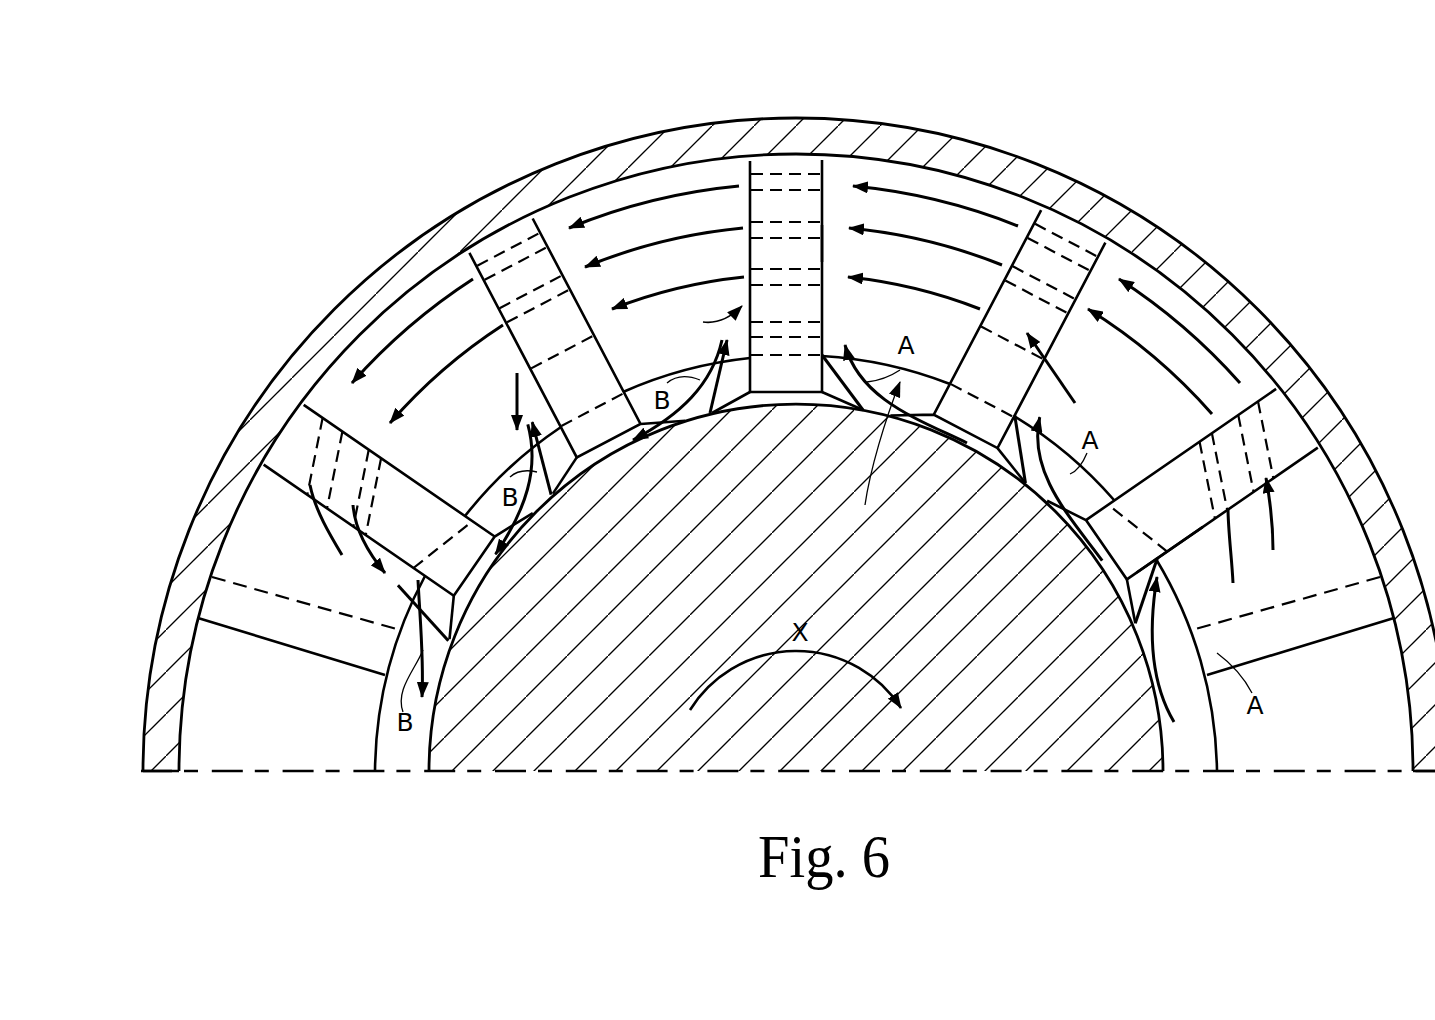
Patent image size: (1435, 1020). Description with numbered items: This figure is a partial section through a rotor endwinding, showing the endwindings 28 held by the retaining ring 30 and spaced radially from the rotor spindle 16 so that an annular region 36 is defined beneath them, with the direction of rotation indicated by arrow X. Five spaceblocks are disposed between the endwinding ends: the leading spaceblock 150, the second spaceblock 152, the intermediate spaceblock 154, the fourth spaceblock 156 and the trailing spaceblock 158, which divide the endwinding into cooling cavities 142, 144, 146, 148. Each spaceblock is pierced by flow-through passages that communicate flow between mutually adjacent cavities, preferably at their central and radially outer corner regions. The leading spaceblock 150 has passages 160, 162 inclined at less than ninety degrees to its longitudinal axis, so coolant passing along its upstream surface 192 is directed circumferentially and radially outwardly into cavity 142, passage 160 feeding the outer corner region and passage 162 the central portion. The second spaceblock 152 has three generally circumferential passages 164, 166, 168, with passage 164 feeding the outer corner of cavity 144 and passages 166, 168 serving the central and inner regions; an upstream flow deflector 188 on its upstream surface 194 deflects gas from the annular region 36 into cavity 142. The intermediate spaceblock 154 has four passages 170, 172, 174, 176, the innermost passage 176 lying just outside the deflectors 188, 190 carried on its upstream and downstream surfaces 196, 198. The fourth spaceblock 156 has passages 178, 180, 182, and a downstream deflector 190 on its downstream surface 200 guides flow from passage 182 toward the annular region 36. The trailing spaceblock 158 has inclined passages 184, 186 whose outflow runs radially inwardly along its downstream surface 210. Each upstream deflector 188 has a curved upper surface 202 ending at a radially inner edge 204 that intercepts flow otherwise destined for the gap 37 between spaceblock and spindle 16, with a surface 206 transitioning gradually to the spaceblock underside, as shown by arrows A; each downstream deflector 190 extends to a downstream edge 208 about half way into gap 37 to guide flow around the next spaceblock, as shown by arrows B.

The rotor spindle 16 is at (990, 750).
The endwindings 28 is at (873, 458).
The retaining ring 30 is at (955, 150).
The annular region 36 is at (705, 445).
The gap 37 is at (802, 428).
The cooling cavity 142 is at (1190, 313).
The cooling cavity 144 is at (905, 175).
The cooling cavity 146 is at (625, 190).
The cooling cavity 148 is at (405, 320).
The leading spaceblock 150 is at (1290, 445).
The second spaceblock 152 is at (1062, 222).
The intermediate spaceblock 154 is at (790, 160).
The fourth spaceblock 156 is at (510, 237).
The trailing spaceblock 158 is at (298, 428).
The flow-through passage 160 is at (1270, 478).
The flow-through passage 162 is at (1207, 478).
The flow-through passage 164 is at (1040, 215).
The flow-through passage 166 is at (1003, 262).
The flow-through passage 168 is at (983, 307).
The flow-through passage 170 is at (745, 176).
The flow-through passage 172 is at (752, 224).
The flow-through passage 174 is at (752, 270).
The flow-through passage 176 is at (822, 320).
The flow-through passage 178 is at (540, 215).
The flow-through passage 180 is at (580, 266).
The flow-through passage 182 is at (597, 310).
The flow-through passage 184 is at (318, 452).
The flow-through passage 186 is at (372, 468).
The upstream flow deflector 188 is at (987, 463).
The downstream flow deflector 190 is at (737, 396).
The upstream surface 192 is at (1192, 520).
The upstream surface 194 is at (1070, 310).
The upstream surface 196 is at (824, 242).
The downstream surface 198 is at (702, 318).
The downstream surface 200 is at (505, 333).
The curved upper surface 202 is at (1043, 505).
The radially inner edge 204 is at (1020, 500).
The deflector surface 206 is at (1137, 612).
The downstream edge 208 is at (550, 507).
The downstream surface 210 is at (410, 562).